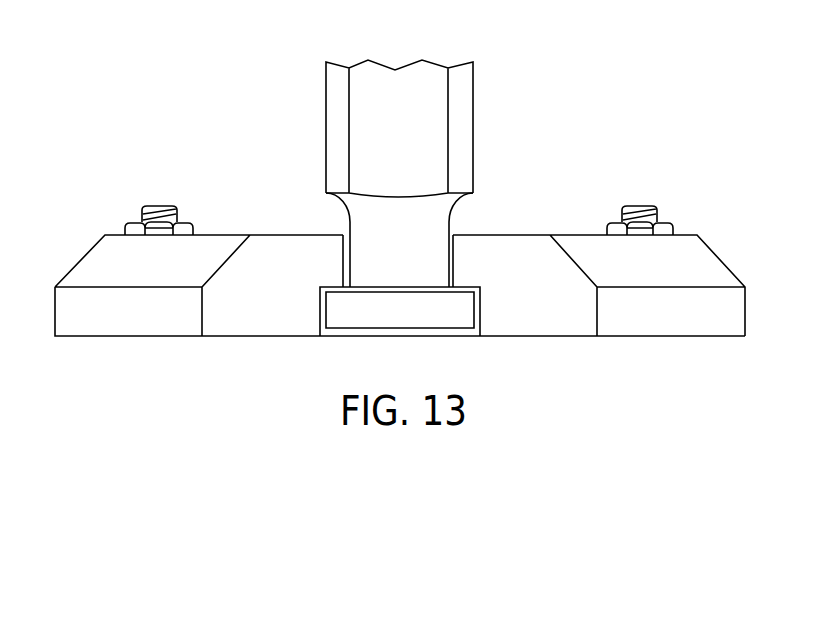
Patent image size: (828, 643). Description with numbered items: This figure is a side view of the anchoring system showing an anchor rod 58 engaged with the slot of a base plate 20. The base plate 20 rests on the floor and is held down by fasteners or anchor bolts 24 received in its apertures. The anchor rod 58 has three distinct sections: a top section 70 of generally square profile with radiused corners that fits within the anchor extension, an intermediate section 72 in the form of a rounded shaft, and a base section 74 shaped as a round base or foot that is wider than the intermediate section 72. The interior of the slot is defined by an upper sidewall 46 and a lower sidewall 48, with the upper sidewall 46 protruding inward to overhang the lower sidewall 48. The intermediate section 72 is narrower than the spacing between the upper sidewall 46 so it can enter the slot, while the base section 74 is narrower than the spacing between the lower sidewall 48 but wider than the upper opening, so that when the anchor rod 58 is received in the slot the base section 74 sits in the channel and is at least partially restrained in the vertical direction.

The base plate 20 is at (78, 248).
The fasteners or anchor bolts 24 is at (157, 207).
The upper sidewall 46 is at (347, 274).
The lower sidewall 48 is at (322, 318).
The anchor rod 58 is at (300, 88).
The top section 70 is at (413, 146).
The intermediate section 72 is at (413, 250).
The base section 74 is at (413, 323).